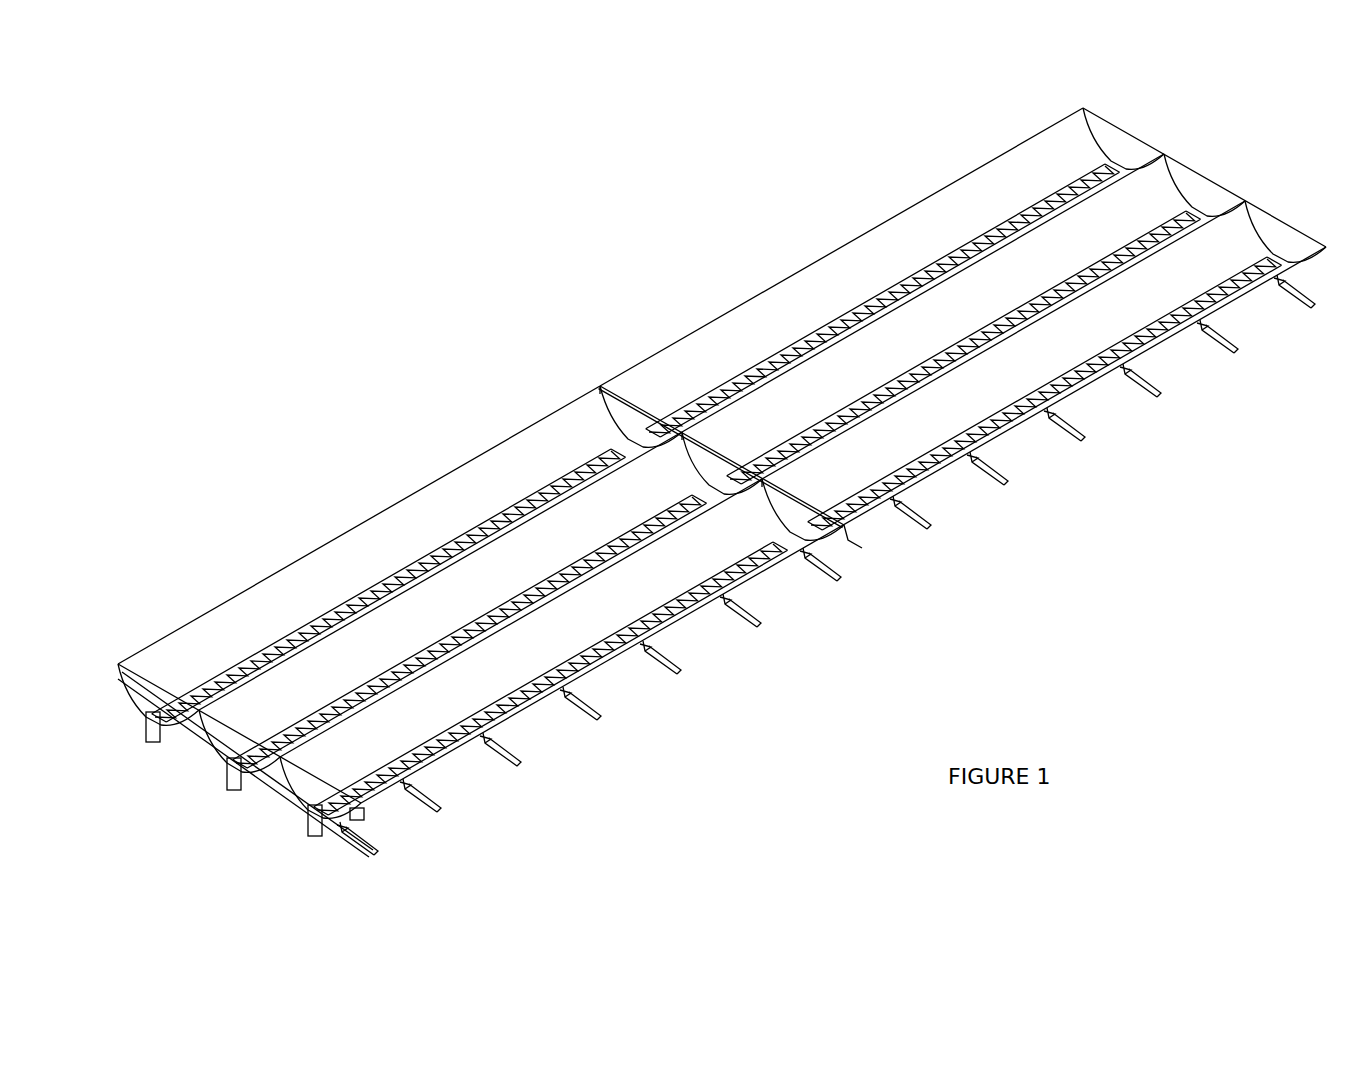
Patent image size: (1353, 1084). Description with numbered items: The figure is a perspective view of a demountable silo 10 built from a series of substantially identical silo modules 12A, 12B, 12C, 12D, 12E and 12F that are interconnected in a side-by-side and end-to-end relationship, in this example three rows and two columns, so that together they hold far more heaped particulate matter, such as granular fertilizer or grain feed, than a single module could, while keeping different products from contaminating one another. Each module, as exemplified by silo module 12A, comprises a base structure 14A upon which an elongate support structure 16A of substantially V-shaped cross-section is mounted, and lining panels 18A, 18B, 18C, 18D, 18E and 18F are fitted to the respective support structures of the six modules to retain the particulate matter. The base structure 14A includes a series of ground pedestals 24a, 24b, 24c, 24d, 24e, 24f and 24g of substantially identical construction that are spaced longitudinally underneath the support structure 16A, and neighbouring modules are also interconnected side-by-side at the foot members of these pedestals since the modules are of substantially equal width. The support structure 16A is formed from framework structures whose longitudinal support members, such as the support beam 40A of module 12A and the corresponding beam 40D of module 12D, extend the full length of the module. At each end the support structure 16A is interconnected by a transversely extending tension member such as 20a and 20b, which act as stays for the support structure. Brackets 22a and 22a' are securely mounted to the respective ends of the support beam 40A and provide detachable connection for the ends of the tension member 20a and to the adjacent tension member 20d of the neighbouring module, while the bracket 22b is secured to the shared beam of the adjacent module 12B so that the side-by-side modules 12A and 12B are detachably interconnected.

The demountable silo 10 is at (486, 356).
The silo module 12A is at (472, 774).
The silo module 12B is at (230, 791).
The silo module 12C is at (316, 536).
The silo module 12D is at (1024, 458).
The silo module 12E is at (1212, 169).
The silo module 12F is at (834, 236).
The base structure 14A is at (315, 838).
The support structure 16A is at (356, 832).
The lining panel 18A is at (672, 632).
The lining panel 18B is at (175, 736).
The lining panel 18C is at (283, 585).
The lining panel 18D is at (1150, 352).
The lining panel 18E is at (1160, 190).
The lining panel 18F is at (770, 290).
The tension member 20a is at (306, 803).
The tension member 20b is at (927, 528).
The tension member 20d is at (200, 742).
The bracket 22a is at (396, 837).
The bracket 22a' is at (899, 556).
The bracket 22b is at (270, 792).
The ground pedestal 24a is at (352, 855).
The ground pedestal 24b is at (460, 818).
The ground pedestal 24c is at (537, 769).
The ground pedestal 24d is at (606, 730).
The ground pedestal 24e is at (685, 677).
The ground pedestal 24f is at (770, 644).
The ground pedestal 24g is at (845, 594).
The longitudinal support member 40A is at (615, 682).
The longitudinal support member 40D is at (1082, 396).